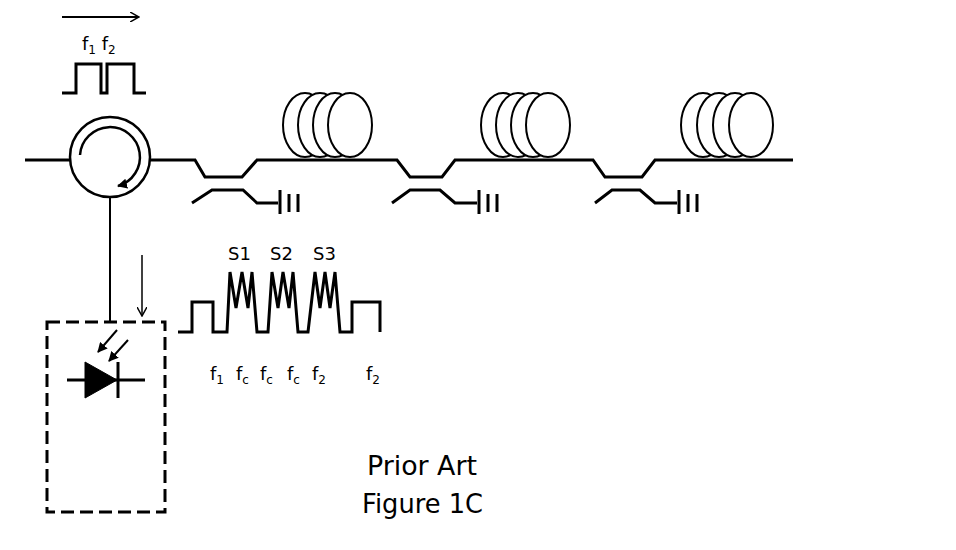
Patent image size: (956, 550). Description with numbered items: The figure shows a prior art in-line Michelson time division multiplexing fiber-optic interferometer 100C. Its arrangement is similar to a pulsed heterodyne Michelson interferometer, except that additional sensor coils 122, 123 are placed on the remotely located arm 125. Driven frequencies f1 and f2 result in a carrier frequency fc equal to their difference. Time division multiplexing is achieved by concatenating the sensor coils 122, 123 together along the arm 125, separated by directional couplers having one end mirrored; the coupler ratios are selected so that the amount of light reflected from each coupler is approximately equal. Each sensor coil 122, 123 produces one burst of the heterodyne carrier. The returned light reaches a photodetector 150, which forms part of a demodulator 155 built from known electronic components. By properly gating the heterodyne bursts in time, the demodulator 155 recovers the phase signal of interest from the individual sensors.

The in-line Michelson TDM fiber-optic interferometer 100C is at (409, 273).
The sensor coil 122 is at (373, 123).
The sensor coil 123 is at (571, 125).
The arm 125 is at (773, 125).
The photodetector 150 is at (85, 398).
The demodulator 155 is at (121, 500).